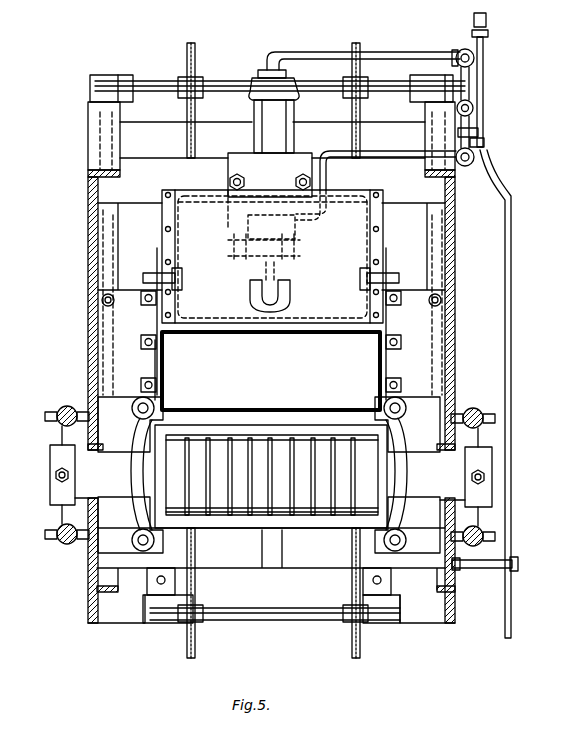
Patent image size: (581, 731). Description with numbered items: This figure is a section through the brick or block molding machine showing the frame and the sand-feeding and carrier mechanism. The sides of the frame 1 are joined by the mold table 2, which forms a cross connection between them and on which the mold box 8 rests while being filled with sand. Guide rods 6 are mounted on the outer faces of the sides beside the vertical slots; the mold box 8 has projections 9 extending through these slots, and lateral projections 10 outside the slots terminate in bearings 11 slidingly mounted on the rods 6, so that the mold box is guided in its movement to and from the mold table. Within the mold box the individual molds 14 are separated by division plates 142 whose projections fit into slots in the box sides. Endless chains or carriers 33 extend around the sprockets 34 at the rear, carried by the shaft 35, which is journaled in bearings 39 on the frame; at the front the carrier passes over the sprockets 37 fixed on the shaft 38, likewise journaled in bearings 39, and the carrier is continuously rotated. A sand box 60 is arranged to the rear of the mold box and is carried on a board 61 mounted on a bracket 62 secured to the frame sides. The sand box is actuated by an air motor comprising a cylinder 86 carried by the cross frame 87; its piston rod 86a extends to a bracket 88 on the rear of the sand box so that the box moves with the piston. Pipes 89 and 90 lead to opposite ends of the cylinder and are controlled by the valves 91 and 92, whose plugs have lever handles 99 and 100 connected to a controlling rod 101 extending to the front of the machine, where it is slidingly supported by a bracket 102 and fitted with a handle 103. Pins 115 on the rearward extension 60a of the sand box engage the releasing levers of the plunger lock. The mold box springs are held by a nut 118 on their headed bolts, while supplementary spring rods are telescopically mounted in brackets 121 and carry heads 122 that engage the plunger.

The sides of the frame 1 is at (88, 270).
The mold table 2 is at (255, 568).
The guide rods 6 is at (67, 406).
The mold box 8 is at (245, 505).
The projections 9 is at (118, 455).
The lateral projections 10 is at (75, 498).
The bearings 11 is at (62, 542).
The individual molds 14 is at (272, 476).
The endless chains or carriers 33 is at (186, 135).
The sprockets 34 is at (200, 76).
The shaft 35 is at (225, 78).
The sprockets 37 is at (205, 604).
The shaft 38 is at (280, 615).
The bearings 39 is at (108, 75).
The sand box 60 is at (282, 410).
The rearward extension of the sand box 60a is at (228, 325).
The board 61 is at (135, 298).
The bracket 62 is at (120, 220).
The cylinder 86 is at (254, 128).
The piston rod 86a is at (276, 268).
The cross frame 87 is at (228, 172).
The bracket 88 is at (250, 295).
The pipe 89 is at (308, 57).
The pipe 90 is at (330, 185).
The valve 91 is at (460, 50).
The valve 92 is at (467, 166).
The lever handle 99 is at (487, 36).
The lever handle 100 is at (484, 147).
The controlling rod 101 is at (483, 80).
The bracket 102 is at (498, 568).
The handle 103 is at (511, 618).
The pins 115 is at (150, 273).
The nut 118 is at (143, 452).
The brackets 121 is at (48, 492).
The heads 122 is at (55, 473).
The division plates 142 is at (333, 505).